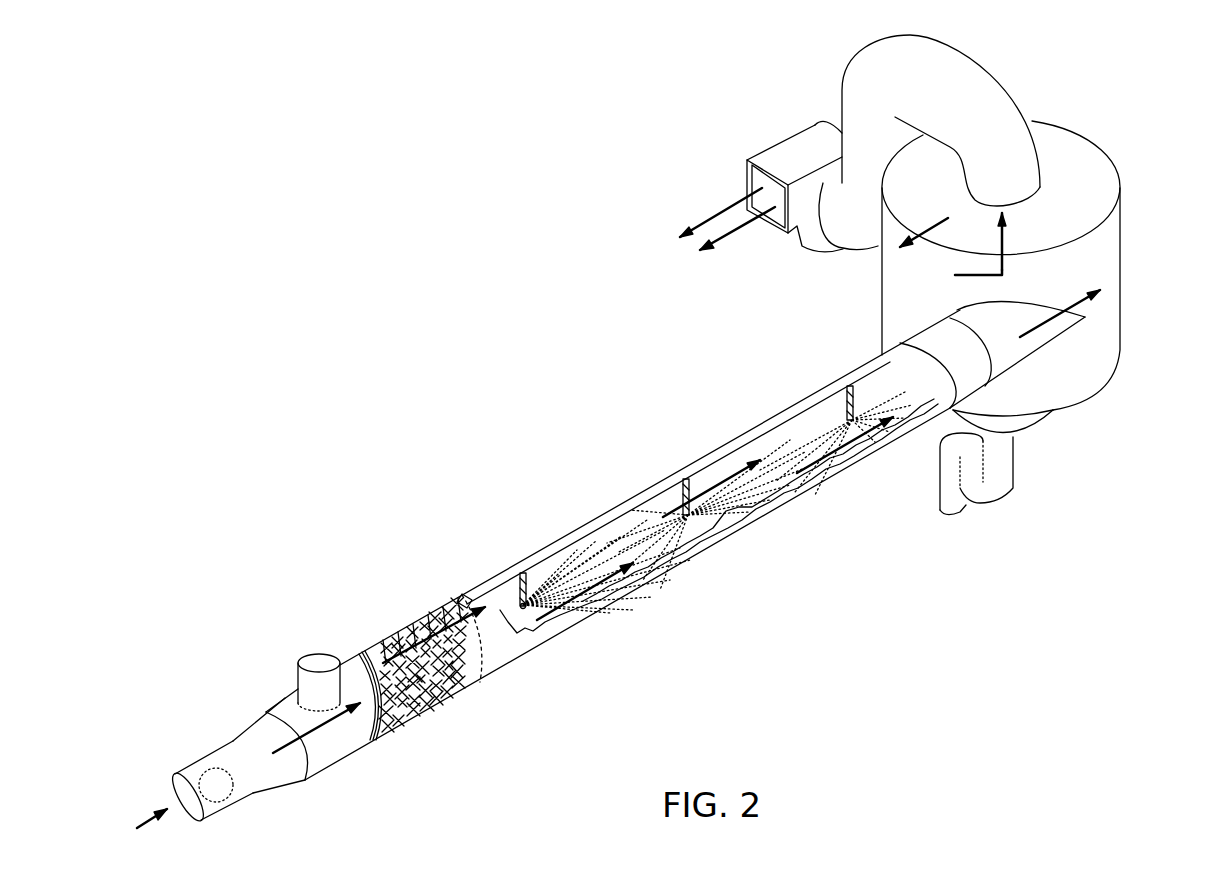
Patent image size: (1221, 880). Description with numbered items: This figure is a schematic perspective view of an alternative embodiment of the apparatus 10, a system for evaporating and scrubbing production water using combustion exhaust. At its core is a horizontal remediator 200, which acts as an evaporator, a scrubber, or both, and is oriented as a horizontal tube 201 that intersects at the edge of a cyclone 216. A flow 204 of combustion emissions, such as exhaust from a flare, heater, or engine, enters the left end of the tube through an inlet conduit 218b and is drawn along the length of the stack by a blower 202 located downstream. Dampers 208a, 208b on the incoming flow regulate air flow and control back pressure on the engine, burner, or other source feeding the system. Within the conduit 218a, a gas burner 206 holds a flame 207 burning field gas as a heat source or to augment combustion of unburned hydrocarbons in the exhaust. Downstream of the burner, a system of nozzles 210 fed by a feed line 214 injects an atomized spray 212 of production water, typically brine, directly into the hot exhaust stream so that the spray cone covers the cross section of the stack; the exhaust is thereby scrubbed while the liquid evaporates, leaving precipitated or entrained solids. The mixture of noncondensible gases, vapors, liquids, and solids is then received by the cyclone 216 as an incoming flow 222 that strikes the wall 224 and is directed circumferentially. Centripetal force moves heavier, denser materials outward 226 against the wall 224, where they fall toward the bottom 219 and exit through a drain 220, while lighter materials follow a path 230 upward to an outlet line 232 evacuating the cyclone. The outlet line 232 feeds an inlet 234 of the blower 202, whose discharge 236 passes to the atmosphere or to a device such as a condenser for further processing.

The apparatus 10 is at (402, 210).
The horizontal remediator 200 is at (758, 537).
The horizontal tube 201 is at (810, 492).
The blower 202 is at (773, 157).
The flow 204 is at (135, 822).
The gas burner 206 is at (463, 705).
The flame 207 is at (457, 723).
The damper 208a is at (313, 662).
The damper 208b is at (215, 780).
The nozzles 210 is at (847, 418).
The atomized spray 212 is at (860, 390).
The feed line 214 is at (557, 540).
The cyclone 216 is at (1132, 312).
The conduit 218a is at (397, 733).
The conduit 218b is at (203, 817).
The bottom 219 is at (1033, 422).
The drain 220 is at (960, 507).
The incoming flow 222 is at (1038, 320).
The wall 224 is at (1120, 266).
The outward movement 226 is at (922, 228).
The path 230 is at (958, 278).
The outlet line 232 is at (982, 90).
The inlet 234 is at (818, 252).
The discharge 236 is at (703, 213).